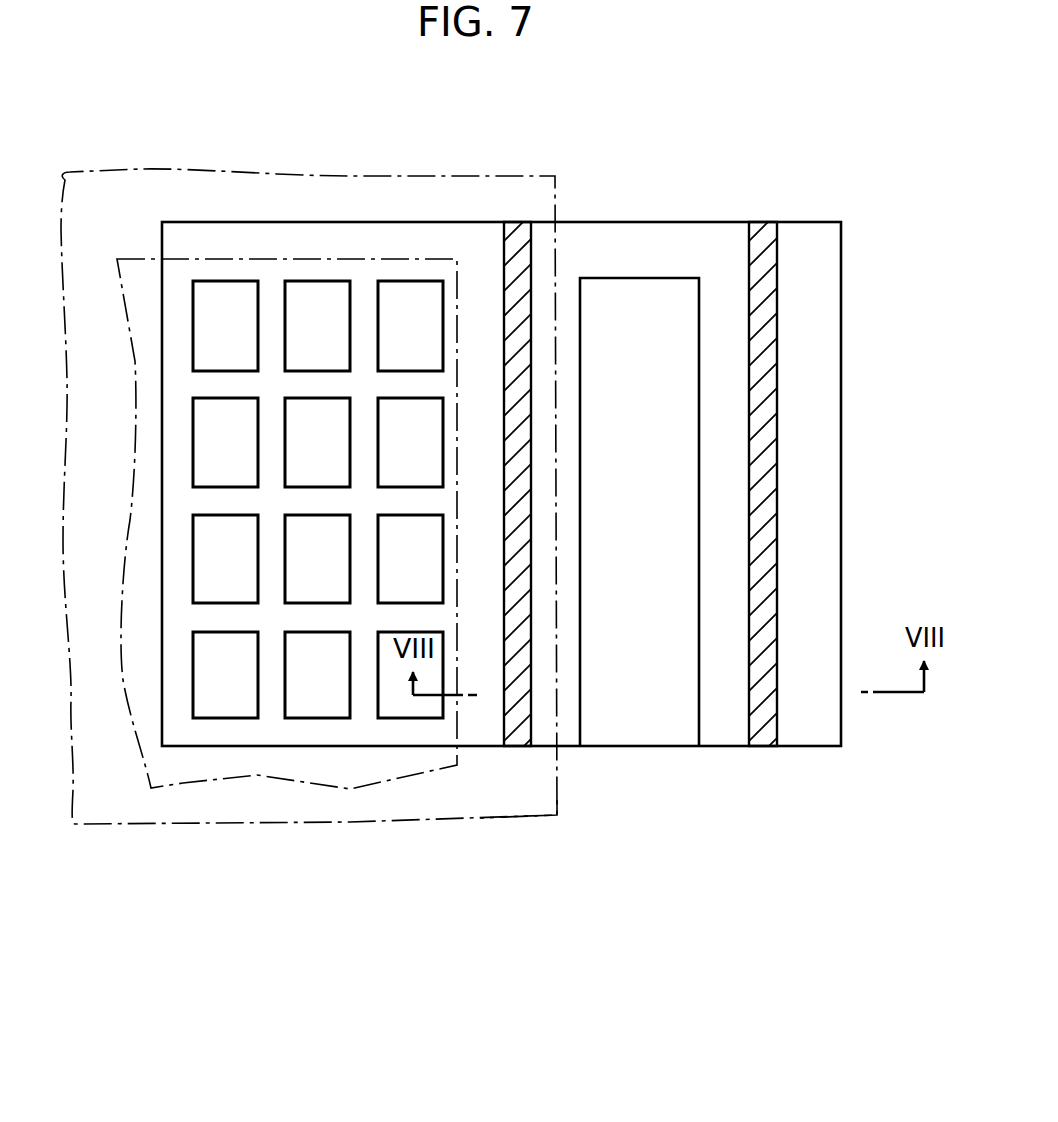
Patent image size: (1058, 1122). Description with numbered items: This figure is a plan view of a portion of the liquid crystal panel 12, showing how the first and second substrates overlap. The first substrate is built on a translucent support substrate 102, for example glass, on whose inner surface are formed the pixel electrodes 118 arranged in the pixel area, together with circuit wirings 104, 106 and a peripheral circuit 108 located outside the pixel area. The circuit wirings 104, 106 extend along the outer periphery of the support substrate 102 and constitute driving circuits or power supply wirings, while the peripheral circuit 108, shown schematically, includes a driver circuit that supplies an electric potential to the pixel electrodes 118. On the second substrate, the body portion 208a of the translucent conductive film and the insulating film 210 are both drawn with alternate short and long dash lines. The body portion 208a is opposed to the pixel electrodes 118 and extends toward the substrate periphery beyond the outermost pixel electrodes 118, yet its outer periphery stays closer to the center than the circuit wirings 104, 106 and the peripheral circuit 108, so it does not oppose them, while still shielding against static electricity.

The liquid crystal panel 12 is at (257, 152).
The support substrate 102 is at (414, 227).
The circuit wiring 104 is at (763, 233).
The circuit wiring 106 is at (516, 227).
The peripheral circuit 108 is at (646, 285).
The pixel electrodes 118 is at (313, 700).
The body portion 208a is at (183, 784).
The insulating film 210 is at (520, 819).